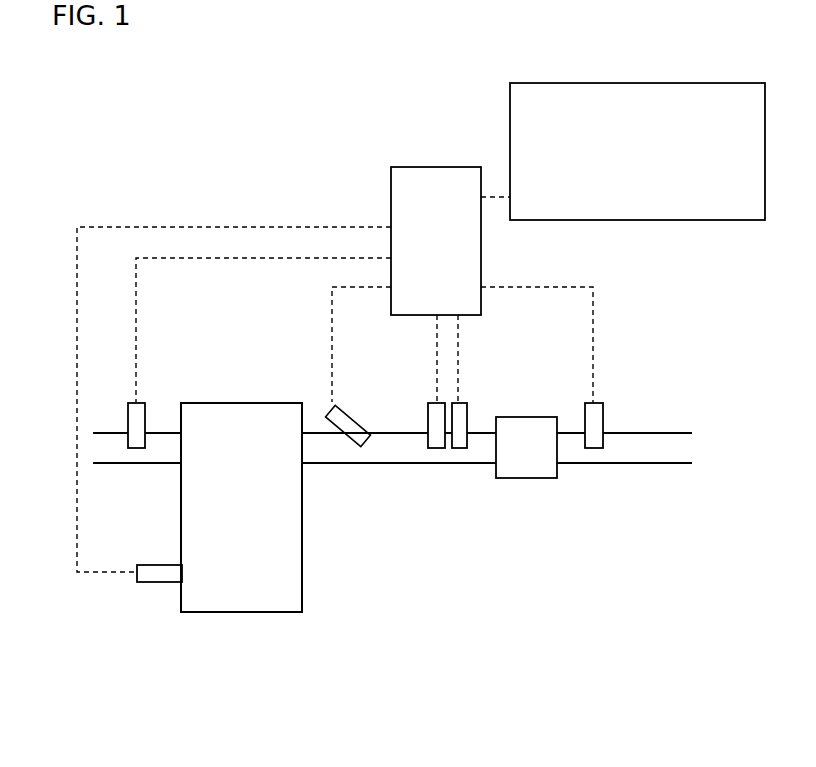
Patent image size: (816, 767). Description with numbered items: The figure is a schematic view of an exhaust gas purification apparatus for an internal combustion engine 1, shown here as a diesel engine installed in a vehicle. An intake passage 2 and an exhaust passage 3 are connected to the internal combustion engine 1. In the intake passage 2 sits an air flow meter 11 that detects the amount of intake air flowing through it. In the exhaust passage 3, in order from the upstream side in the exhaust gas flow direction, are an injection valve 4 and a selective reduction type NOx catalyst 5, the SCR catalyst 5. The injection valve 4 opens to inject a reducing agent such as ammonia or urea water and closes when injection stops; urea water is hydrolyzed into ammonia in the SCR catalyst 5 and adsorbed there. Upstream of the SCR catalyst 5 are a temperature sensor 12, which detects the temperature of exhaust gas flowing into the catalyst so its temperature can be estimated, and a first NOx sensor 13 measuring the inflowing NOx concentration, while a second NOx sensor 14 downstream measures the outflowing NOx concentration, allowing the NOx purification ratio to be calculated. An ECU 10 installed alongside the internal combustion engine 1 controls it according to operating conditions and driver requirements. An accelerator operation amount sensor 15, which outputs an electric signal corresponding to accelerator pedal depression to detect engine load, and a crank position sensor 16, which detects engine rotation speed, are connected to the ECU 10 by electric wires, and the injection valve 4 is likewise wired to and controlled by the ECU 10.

The internal combustion engine 1 is at (240, 403).
The intake passage 2 is at (132, 463).
The exhaust passage 3 is at (356, 463).
The injection valve 4 is at (344, 408).
The selective reduction type NOx catalyst 5 is at (525, 478).
The ECU 10 is at (389, 197).
The air flow meter 11 is at (148, 410).
The temperature sensor 12 is at (428, 406).
The first NOx sensor 13 is at (470, 406).
The second NOx sensor 14 is at (585, 408).
The accelerator operation amount sensor 15 is at (741, 222).
The crank position sensor 16 is at (156, 585).